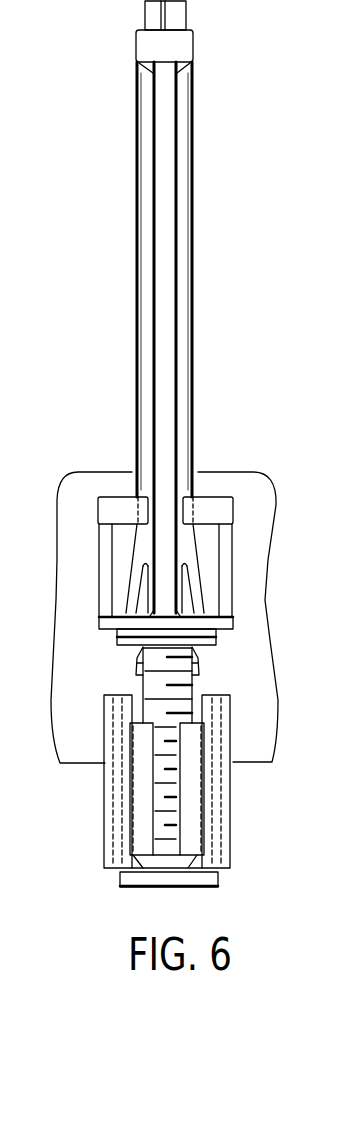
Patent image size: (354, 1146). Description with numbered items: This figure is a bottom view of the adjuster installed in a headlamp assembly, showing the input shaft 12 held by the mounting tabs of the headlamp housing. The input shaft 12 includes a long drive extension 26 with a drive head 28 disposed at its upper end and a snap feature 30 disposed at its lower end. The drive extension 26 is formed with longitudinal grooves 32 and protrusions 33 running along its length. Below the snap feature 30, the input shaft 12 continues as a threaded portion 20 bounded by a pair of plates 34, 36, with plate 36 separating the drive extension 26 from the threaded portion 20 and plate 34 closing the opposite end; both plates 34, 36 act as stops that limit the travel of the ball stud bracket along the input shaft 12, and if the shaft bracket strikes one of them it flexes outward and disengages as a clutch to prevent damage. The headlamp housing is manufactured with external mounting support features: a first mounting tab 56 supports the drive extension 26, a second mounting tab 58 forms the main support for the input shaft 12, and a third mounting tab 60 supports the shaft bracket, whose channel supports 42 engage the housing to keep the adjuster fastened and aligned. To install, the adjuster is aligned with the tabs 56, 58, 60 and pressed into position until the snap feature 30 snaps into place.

The input shaft 12 is at (241, 341).
The threaded portion 20 is at (157, 685).
The drive extension 26 is at (195, 246).
The drive head 28 is at (178, 13).
The snap feature 30 is at (140, 571).
The longitudinal grooves 32 is at (143, 107).
The protrusions 33 is at (167, 152).
The plate 34 is at (193, 880).
The plate 36 is at (215, 640).
The channel supports 42 is at (138, 770).
The first mounting tab 56 is at (120, 507).
The second mounting tab 58 is at (110, 627).
The third mounting tab 60 is at (110, 822).